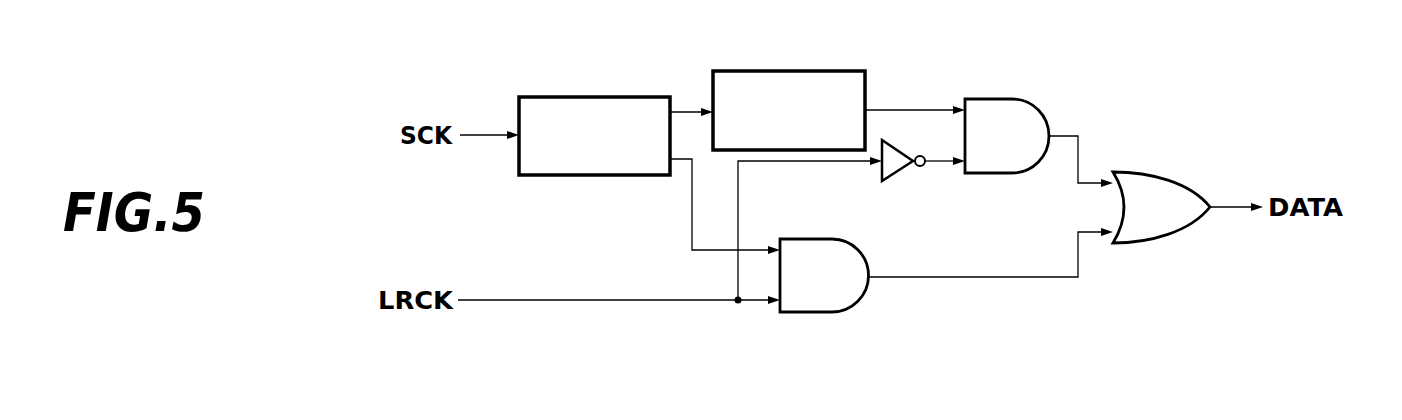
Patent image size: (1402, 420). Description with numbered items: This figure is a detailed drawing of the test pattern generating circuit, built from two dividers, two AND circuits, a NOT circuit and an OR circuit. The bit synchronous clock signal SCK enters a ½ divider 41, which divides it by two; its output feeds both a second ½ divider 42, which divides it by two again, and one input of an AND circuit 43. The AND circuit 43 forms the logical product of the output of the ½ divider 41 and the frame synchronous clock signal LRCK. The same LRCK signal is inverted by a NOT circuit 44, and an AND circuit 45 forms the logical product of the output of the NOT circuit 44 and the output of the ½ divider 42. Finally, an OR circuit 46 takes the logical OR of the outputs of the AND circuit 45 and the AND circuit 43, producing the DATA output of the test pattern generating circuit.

The ½ divider 41 is at (563, 97).
The ½ divider 42 is at (790, 71).
The AND circuit 43 is at (838, 312).
The NOT circuit 44 is at (893, 180).
The AND circuit 45 is at (992, 99).
The OR circuit 46 is at (1175, 172).